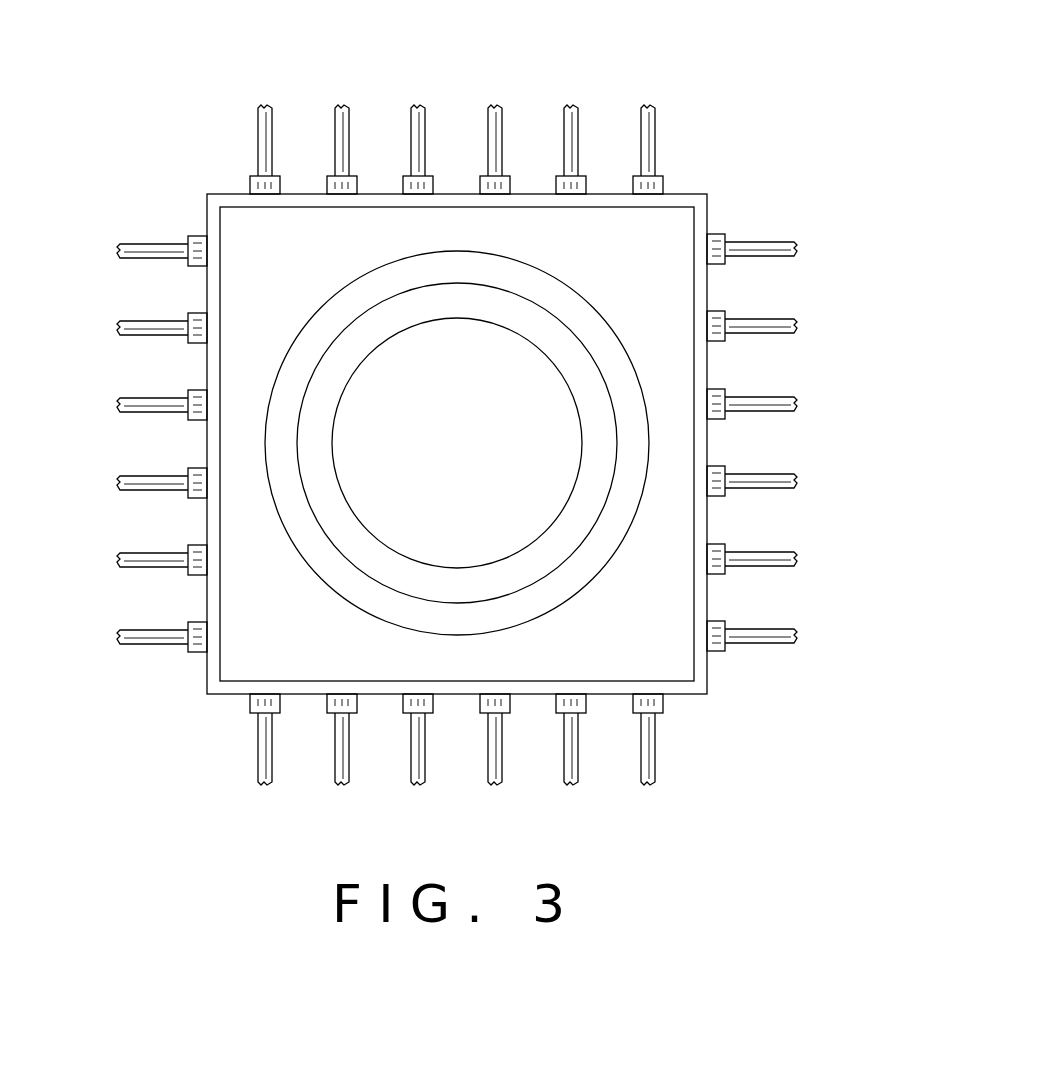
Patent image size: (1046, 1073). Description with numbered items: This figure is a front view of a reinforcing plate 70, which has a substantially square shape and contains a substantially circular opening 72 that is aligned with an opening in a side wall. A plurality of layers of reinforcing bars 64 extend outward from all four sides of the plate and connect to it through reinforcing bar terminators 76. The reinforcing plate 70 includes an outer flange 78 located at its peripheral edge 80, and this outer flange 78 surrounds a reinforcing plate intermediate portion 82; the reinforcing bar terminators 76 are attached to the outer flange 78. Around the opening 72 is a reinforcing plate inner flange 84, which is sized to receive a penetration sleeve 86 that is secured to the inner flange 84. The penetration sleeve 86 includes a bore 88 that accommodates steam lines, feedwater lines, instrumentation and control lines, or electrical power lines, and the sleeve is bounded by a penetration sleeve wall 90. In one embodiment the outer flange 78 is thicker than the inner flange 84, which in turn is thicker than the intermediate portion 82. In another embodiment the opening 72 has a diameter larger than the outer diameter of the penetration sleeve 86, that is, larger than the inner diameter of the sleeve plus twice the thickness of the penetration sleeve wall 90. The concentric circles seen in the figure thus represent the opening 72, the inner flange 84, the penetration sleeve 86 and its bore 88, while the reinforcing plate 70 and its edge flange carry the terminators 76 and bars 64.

The reinforcing plate 70 is at (780, 91).
The reinforcing bars 64 is at (350, 118).
The reinforcing bar terminators 76 is at (357, 182).
The outer flange 78 is at (207, 206).
The peripheral edge 80 is at (222, 203).
The reinforcing plate intermediate portion 82 is at (658, 265).
The reinforcing plate inner flange 84 is at (633, 458).
The penetration sleeve 86 is at (615, 397).
The bore 88 is at (553, 490).
The penetration sleeve wall 90 is at (315, 440).
The opening 72 is at (378, 479).